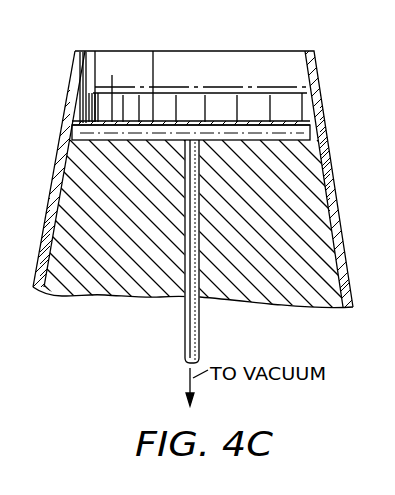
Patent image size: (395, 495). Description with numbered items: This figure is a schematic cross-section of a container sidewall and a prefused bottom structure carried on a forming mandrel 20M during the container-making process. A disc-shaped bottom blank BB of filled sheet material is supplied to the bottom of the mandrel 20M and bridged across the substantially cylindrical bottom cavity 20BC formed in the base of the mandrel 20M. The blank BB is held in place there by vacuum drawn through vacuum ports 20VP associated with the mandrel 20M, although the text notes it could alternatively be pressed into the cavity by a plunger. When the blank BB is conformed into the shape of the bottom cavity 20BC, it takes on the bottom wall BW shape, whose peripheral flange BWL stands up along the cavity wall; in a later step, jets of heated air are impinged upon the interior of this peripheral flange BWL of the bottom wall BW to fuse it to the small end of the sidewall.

The mandrel 20M is at (138, 272).
The vacuum ports 20VP is at (200, 312).
The bottom cavity 20BC is at (227, 118).
The bottom wall BW is at (177, 140).
The bottom blank BB is at (218, 82).
The peripheral flange of the bottom wall BWL is at (74, 110).